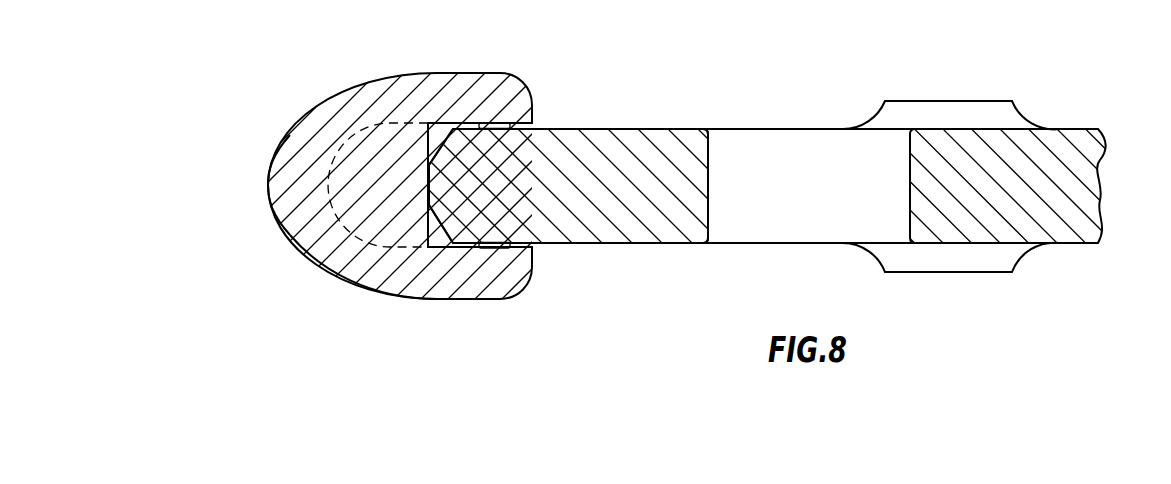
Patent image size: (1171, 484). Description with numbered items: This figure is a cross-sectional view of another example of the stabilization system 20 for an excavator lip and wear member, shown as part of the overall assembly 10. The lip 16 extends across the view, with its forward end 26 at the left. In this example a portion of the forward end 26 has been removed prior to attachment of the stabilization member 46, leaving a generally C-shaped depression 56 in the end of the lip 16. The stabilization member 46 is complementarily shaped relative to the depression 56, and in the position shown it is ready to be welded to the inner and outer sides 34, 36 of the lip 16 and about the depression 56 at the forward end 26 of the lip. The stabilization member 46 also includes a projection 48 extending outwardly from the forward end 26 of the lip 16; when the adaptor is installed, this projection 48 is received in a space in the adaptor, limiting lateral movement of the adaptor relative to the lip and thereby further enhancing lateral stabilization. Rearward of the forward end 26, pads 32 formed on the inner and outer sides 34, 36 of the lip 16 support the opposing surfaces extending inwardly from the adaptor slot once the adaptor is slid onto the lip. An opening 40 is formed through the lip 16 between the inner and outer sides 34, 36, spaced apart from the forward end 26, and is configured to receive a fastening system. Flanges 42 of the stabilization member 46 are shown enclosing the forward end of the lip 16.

The tool assembly 10 is at (264, 66).
The lip 16 is at (1078, 128).
The stabilization system 20 is at (560, 103).
The forward end 26 is at (308, 176).
The pads 32 is at (977, 100).
The inner side 34 is at (627, 129).
The outer side 36 is at (613, 243).
The opening 40 is at (709, 158).
The head flange 42 is at (493, 73).
The stabilization member 46 is at (335, 275).
The projection 48 is at (268, 185).
The depression 56 is at (428, 180).